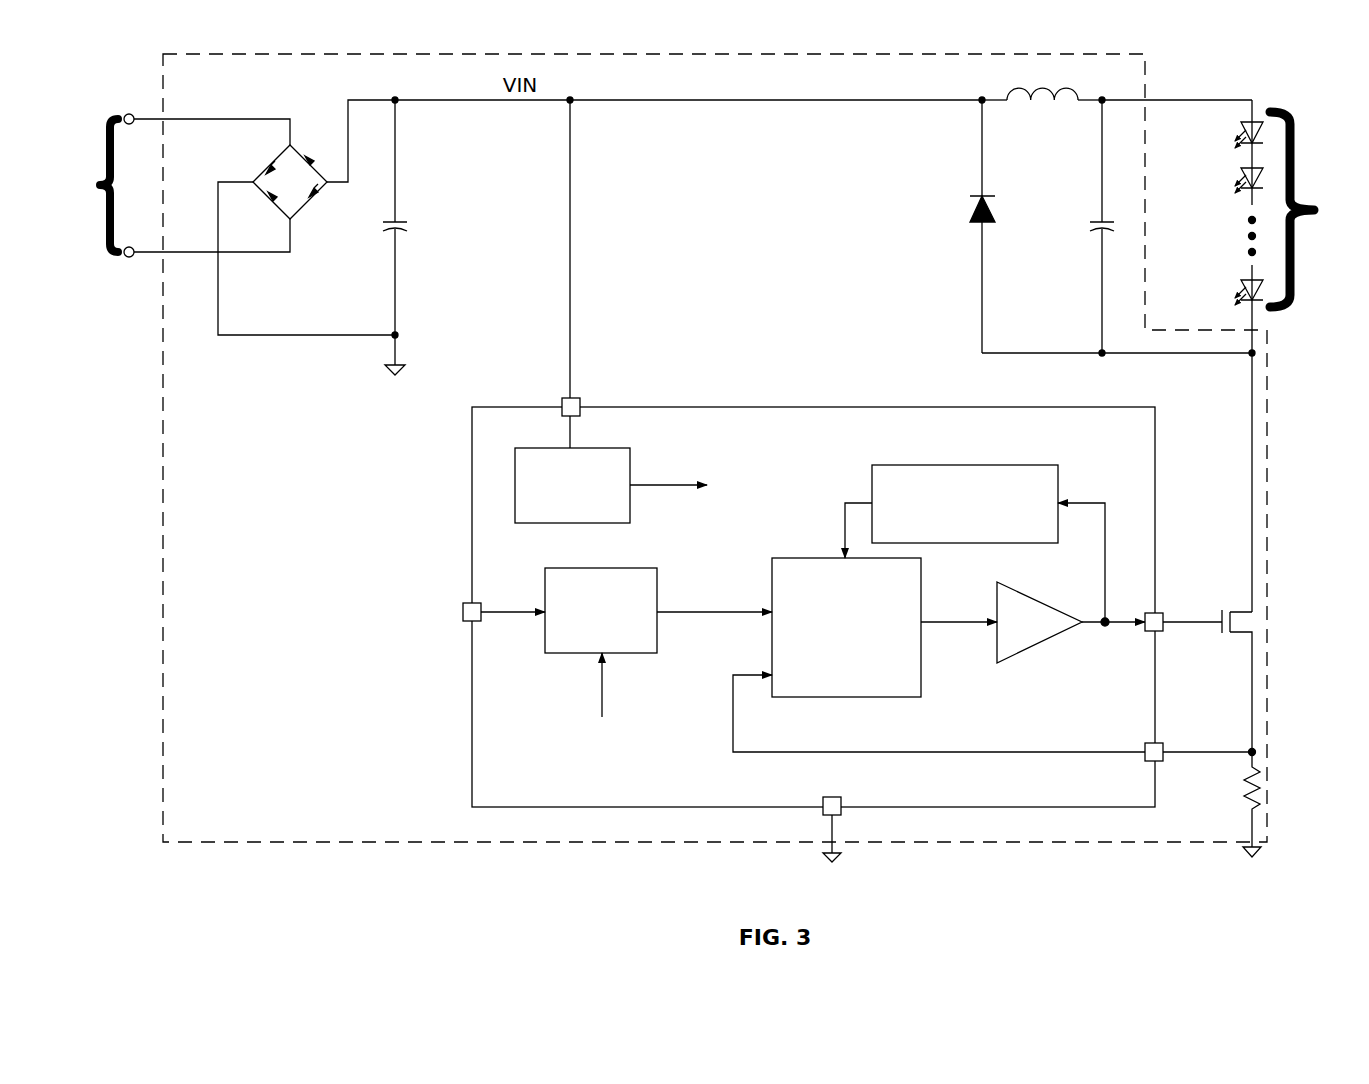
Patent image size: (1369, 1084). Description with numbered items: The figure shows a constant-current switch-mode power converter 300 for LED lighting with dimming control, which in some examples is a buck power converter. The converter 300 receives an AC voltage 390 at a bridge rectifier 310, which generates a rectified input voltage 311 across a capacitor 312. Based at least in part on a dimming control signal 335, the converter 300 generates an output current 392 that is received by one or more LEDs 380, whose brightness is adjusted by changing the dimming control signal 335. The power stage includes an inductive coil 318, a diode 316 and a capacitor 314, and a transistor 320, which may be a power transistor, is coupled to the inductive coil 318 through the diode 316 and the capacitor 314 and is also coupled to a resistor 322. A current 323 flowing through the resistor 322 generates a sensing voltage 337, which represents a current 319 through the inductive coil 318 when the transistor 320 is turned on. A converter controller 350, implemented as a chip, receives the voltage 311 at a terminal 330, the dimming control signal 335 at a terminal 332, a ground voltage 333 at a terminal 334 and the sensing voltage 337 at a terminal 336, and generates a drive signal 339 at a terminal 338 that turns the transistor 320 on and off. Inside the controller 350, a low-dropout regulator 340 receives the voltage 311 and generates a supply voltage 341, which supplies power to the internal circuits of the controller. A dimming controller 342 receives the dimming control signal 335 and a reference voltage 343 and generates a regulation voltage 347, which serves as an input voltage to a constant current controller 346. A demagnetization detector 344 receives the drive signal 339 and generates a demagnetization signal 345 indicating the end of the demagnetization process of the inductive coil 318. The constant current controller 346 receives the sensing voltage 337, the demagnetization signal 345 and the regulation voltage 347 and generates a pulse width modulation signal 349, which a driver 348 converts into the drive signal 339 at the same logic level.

The constant-current switch-mode power converter 300 is at (715, 474).
The AC voltage 390 is at (99, 185).
The bridge rectifier 310 is at (273, 197).
The voltage 311 is at (459, 81).
The capacitor 312 is at (418, 217).
The capacitor 314 is at (1085, 226).
The diode 316 is at (964, 226).
The inductive coil 318 is at (1042, 98).
The current 319 is at (1090, 76).
The output current 392 is at (1177, 82).
The LEDs 380 is at (1295, 226).
The converter controller 350 is at (813, 586).
The terminal 330 is at (562, 394).
The terminal 332 is at (448, 596).
The terminal 334 is at (832, 818).
The terminal 336 is at (1172, 771).
The terminal 338 is at (1182, 636).
The low-dropout regulator 340 is at (575, 507).
The voltage 341 is at (668, 492).
The dimming controller 342 is at (604, 631).
The reference voltage 343 is at (618, 700).
The demagnetization detector 344 is at (965, 526).
The demagnetization signal 345 is at (831, 518).
The constant current controller 346 is at (846, 649).
The regulation voltage 347 is at (714, 590).
The driver 348 is at (1039, 633).
The signal 349 is at (959, 630).
The drive signal 339 is at (1144, 585).
The dimming control signal 335 is at (513, 632).
The sensing voltage 337 is at (1207, 734).
The transistor 320 is at (1254, 681).
The resistor 322 is at (1228, 799).
The current 323 is at (1282, 773).
The ground voltage 333 is at (1042, 847).